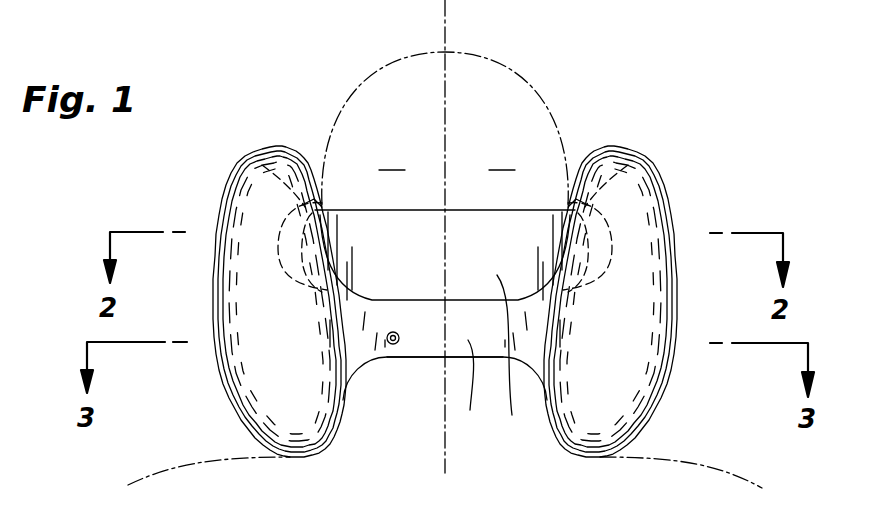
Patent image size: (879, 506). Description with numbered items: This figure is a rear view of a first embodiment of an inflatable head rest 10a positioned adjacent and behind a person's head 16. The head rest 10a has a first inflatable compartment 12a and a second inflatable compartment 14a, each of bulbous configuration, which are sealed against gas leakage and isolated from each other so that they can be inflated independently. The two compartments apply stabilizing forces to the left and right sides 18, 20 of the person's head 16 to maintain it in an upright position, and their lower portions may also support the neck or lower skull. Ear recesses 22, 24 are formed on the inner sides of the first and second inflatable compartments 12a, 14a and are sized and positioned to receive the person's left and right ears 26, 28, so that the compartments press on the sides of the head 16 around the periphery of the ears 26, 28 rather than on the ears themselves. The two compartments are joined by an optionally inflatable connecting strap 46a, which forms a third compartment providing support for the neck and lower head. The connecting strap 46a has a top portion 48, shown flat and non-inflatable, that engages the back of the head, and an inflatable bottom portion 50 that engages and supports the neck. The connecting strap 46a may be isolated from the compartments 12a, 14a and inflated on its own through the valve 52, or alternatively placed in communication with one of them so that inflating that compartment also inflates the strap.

The head rest 10a is at (677, 91).
The first inflatable compartment 12a is at (273, 147).
The second inflatable compartment 14a is at (617, 147).
The person's head 16 is at (507, 68).
The left side of the person's head 18 is at (391, 159).
The right side of the person's head 20 is at (501, 159).
The ear recess 22 is at (288, 236).
The ear recess 24 is at (602, 236).
The left ear 26 is at (262, 165).
The right ear 28 is at (628, 165).
The connecting strap 46a is at (423, 378).
The top portion 48 is at (516, 361).
The bottom portion 50 is at (474, 390).
The valve 52 is at (392, 345).